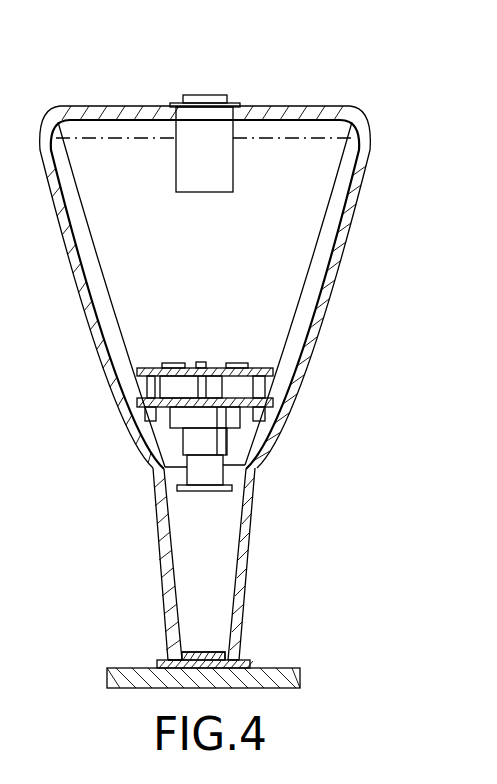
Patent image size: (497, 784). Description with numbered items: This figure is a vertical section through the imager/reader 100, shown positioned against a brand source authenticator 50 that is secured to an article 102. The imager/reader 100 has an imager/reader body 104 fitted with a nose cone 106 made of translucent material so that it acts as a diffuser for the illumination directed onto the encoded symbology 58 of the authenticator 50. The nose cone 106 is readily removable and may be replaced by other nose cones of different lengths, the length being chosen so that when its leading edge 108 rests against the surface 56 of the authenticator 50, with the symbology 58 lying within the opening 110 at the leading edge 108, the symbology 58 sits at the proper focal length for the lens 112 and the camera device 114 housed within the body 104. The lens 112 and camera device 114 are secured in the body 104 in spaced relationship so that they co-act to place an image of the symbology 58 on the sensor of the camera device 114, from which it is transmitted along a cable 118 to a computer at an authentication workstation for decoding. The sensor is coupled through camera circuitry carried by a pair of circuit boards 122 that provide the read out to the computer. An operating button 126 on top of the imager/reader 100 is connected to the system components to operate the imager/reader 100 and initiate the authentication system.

The imager/reader 100 is at (241, 351).
The article 102 is at (290, 675).
The imager/reader body 104 is at (334, 324).
The nose cone 106 is at (249, 544).
The leading edge 108 is at (172, 659).
The opening 110 is at (199, 633).
The lens 112 is at (223, 464).
The camera device 114 is at (240, 389).
The cable 118 is at (208, 385).
The circuit boards 122 is at (262, 375).
The operating button 126 is at (205, 95).
The authenticator 50 is at (250, 665).
The surface 56 is at (232, 650).
The encoded symbology 58 is at (215, 642).